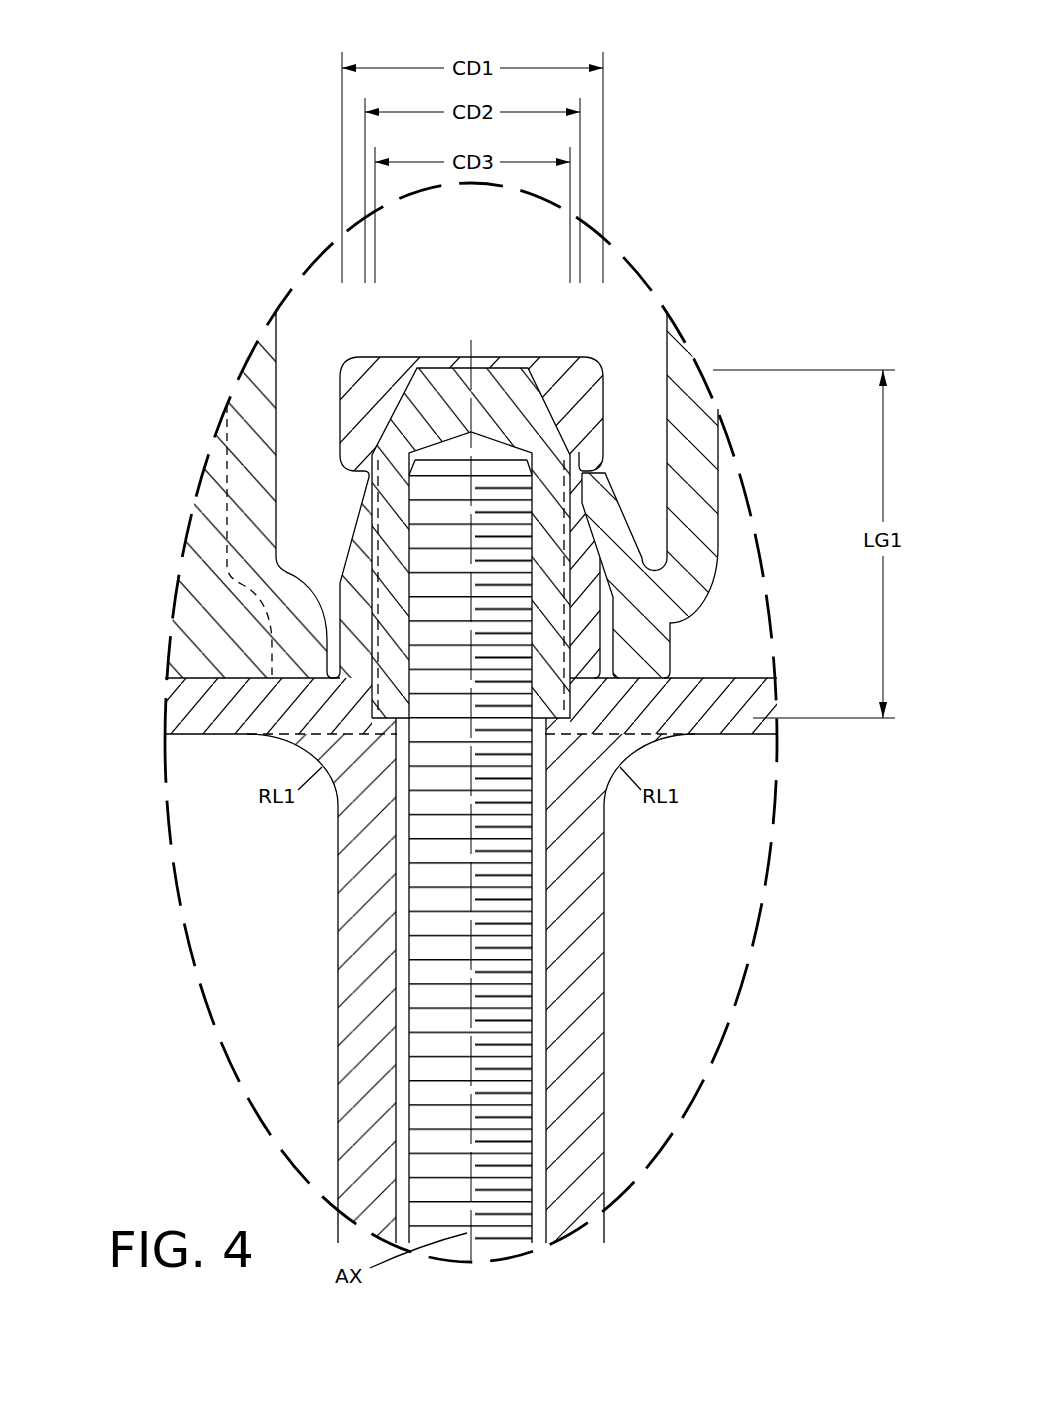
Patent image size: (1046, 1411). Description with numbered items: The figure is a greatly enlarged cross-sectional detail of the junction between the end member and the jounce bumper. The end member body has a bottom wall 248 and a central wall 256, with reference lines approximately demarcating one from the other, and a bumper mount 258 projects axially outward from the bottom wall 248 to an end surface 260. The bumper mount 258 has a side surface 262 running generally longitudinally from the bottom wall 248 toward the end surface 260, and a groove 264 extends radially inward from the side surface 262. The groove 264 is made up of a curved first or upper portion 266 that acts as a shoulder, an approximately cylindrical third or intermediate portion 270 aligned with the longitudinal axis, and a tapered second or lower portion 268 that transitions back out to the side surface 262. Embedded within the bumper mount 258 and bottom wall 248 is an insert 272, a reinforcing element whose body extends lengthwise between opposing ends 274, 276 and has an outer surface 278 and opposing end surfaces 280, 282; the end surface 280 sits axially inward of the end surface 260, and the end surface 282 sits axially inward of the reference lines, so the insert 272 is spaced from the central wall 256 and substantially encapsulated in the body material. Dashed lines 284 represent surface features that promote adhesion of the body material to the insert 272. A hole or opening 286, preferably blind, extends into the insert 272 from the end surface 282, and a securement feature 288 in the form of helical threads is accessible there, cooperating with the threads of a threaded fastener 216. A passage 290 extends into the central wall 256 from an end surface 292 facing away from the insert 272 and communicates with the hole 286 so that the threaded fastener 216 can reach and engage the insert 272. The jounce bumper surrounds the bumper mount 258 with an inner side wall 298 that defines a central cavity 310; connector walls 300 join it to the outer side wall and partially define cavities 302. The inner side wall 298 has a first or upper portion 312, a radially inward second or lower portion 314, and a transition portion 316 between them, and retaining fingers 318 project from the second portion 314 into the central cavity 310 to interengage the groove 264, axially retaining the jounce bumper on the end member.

The threaded fastener 216 is at (525, 940).
The bottom wall 248 is at (198, 718).
The central wall 256 is at (350, 945).
The bumper mount 258 is at (593, 365).
The end surface 260 is at (440, 357).
The side surface 262 is at (333, 653).
The groove 264 is at (327, 505).
The first or upper portion 266 is at (608, 437).
The second or lower portion 268 is at (350, 546).
The third or intermediate portion 270 is at (365, 478).
The insert 272 is at (402, 393).
The end 274 is at (577, 413).
The end 276 is at (353, 697).
The outer surface 278 is at (572, 633).
The end surface 280 is at (503, 362).
The end surface 282 is at (342, 818).
The dashed lines 284 is at (375, 606).
The hole or opening 286 is at (452, 463).
The securement feature 288 is at (392, 657).
The passage 290 is at (400, 965).
The end surface 292 is at (686, 680).
The inner side wall 298 is at (246, 393).
The connector walls 300 is at (214, 468).
The cavities 302 is at (728, 645).
The central cavity 310 is at (305, 296).
The first or upper portion 312 is at (700, 522).
The second or lower portion 314 is at (650, 663).
The transition portion 316 is at (657, 607).
The retaining fingers or projections 318 is at (600, 510).